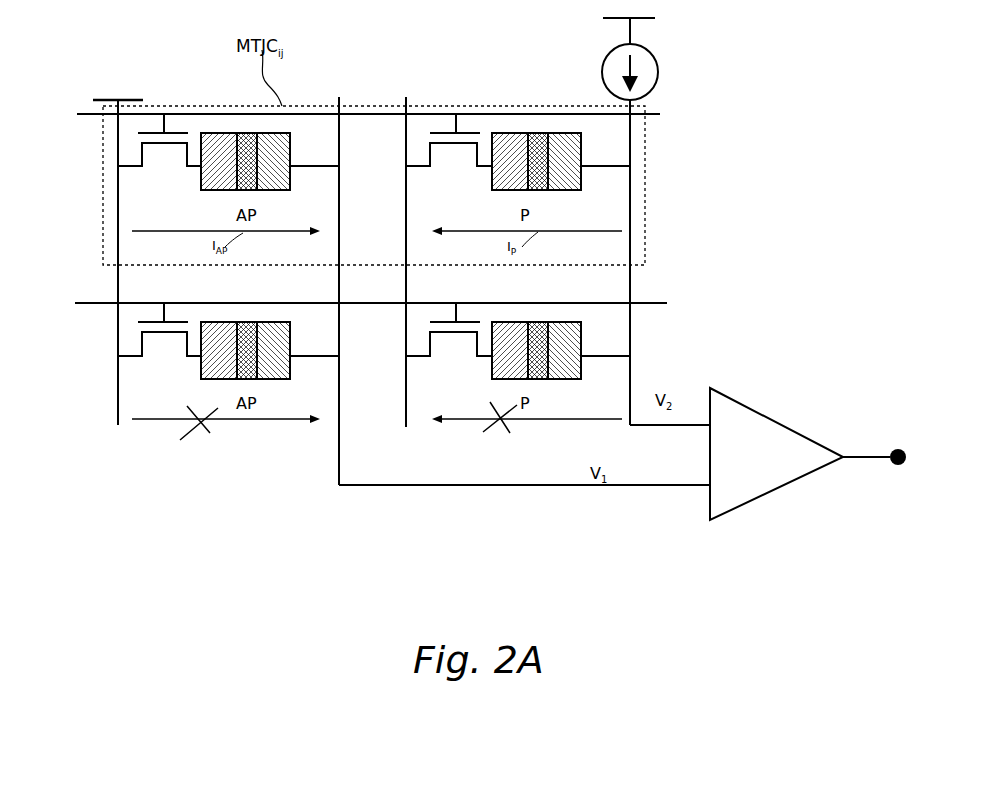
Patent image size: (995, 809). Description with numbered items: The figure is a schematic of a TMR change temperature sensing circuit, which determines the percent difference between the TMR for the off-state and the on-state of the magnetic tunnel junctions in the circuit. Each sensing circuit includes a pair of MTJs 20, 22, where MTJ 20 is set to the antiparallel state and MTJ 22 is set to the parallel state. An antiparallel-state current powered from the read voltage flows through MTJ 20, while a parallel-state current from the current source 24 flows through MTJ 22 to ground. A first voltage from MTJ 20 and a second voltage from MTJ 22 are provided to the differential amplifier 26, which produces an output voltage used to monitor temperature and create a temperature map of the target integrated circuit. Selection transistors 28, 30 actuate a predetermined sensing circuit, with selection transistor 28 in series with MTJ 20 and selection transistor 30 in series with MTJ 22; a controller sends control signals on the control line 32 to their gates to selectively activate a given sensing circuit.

The MTJ 20 is at (245, 133).
The MTJ 22 is at (515, 133).
The current source 24 is at (606, 55).
The differential amplifier 26 is at (778, 465).
The selection transistor 28 is at (143, 150).
The selection transistor 30 is at (437, 133).
The control line 32 is at (85, 114).